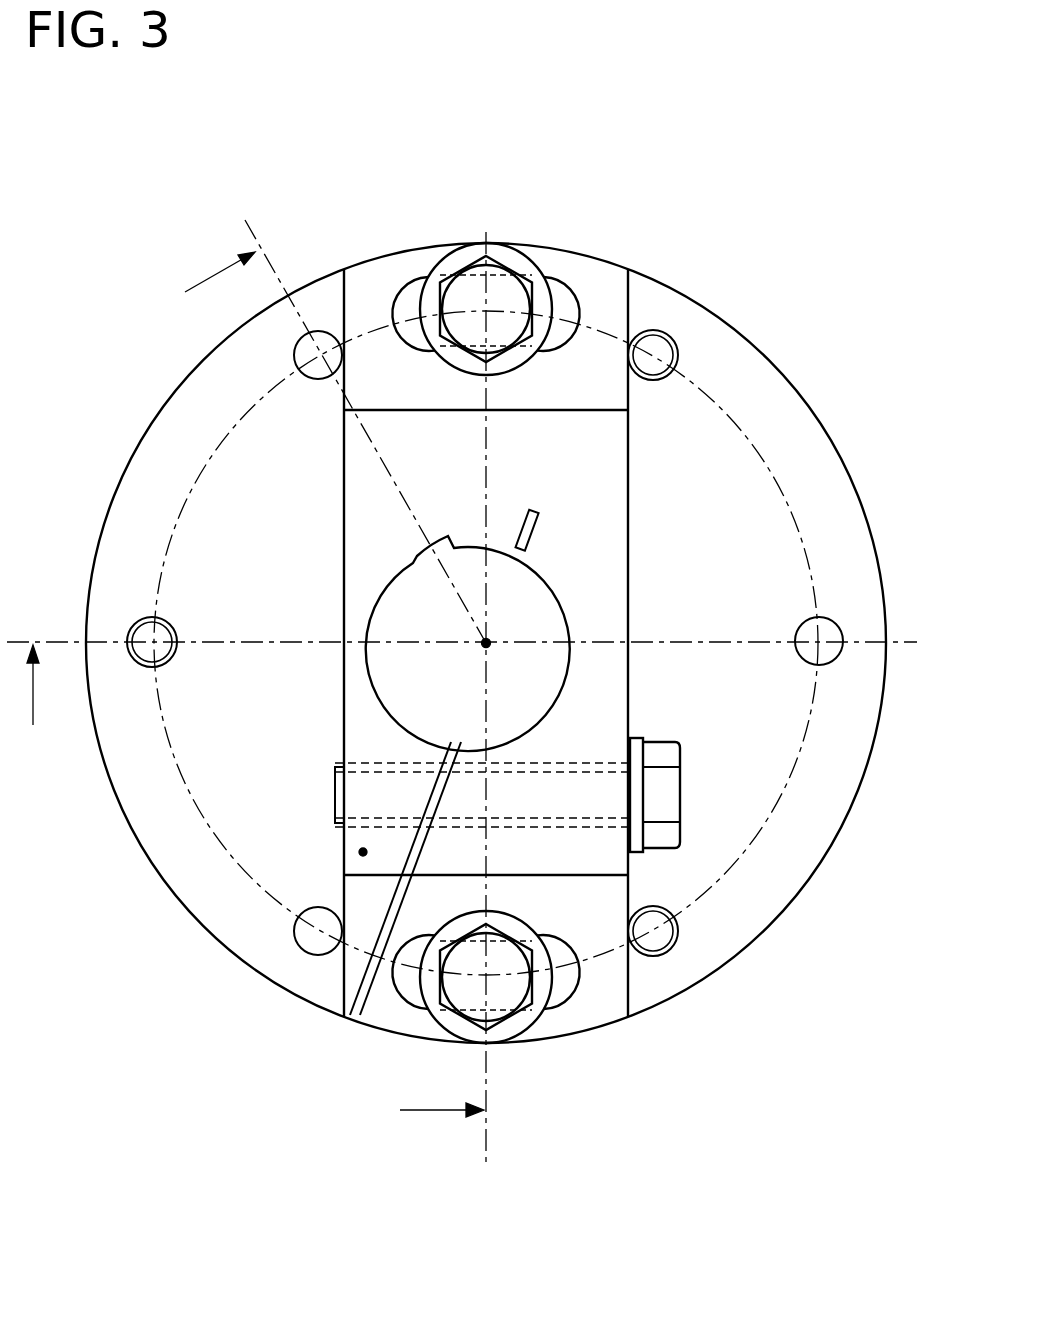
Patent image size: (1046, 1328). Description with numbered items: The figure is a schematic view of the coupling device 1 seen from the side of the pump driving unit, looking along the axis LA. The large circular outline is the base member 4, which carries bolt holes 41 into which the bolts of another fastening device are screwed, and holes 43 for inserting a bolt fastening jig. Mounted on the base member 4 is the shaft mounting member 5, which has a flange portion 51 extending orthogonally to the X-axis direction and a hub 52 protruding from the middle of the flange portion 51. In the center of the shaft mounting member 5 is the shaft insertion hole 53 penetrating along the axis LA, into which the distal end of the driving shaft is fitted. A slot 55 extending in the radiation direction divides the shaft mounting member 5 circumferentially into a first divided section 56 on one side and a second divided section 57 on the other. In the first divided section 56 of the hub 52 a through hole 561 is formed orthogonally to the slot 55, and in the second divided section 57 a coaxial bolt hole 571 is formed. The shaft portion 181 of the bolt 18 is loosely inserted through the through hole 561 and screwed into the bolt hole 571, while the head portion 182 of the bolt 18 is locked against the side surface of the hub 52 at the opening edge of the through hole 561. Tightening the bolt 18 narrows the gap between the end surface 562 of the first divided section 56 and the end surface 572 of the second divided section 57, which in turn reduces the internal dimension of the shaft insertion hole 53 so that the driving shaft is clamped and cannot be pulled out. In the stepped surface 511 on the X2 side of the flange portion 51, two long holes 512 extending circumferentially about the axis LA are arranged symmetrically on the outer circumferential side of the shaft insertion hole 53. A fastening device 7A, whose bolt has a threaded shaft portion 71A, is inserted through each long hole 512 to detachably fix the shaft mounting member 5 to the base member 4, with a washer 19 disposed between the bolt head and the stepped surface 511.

The robot 1 is at (155, 129).
The base member 4 is at (138, 433).
The bolt hole 41 is at (138, 620).
The hole 43 is at (322, 330).
The shaft mounting member 5 is at (417, 245).
The flange portion 51 is at (630, 303).
The stepped surface 511 is at (602, 273).
The long hole 512 is at (410, 283).
The hub 52 is at (630, 442).
The shaft insertion hole 53 is at (570, 697).
The slot 55 is at (323, 1008).
The first divided section 56 is at (626, 1000).
The through hole 561 is at (593, 758).
The end surface 562 is at (360, 1010).
The second divided section 57 is at (363, 852).
The bolt hole 571 is at (360, 822).
The end surface 572 is at (345, 1013).
The bolt 18 is at (680, 800).
The shaft portion 181 is at (361, 767).
The head portion 182 is at (680, 834).
The washer 19 is at (455, 250).
The fastening device 7A is at (498, 272).
The shaft portion 71A is at (520, 283).
The axis LA is at (486, 643).